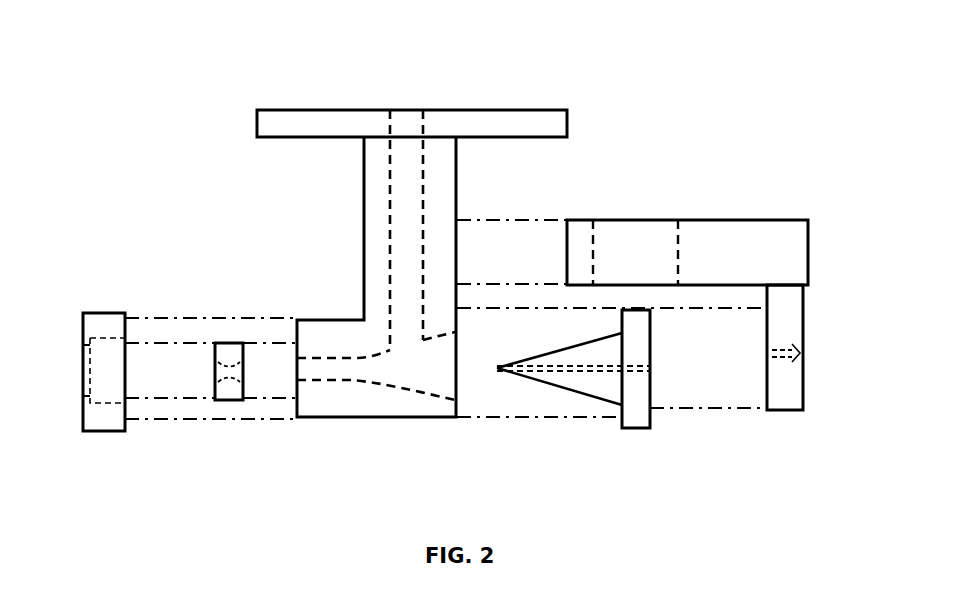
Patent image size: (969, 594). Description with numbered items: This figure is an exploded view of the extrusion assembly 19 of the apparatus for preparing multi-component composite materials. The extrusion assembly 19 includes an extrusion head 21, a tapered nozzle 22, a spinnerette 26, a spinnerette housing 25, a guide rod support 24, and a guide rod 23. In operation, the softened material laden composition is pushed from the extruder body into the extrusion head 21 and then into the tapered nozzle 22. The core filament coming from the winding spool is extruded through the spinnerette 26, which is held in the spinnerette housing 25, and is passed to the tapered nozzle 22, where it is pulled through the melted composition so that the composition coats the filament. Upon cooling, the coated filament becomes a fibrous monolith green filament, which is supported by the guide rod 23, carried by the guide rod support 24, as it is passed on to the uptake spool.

The extrusion assembly 19 is at (660, 153).
The extrusion head 21 is at (443, 110).
The tapered nozzle 22 is at (637, 428).
The guide rod 23 is at (232, 343).
The guide rod support 24 is at (100, 313).
The spinnerette housing 25 is at (743, 220).
The spinnerette 26 is at (803, 353).